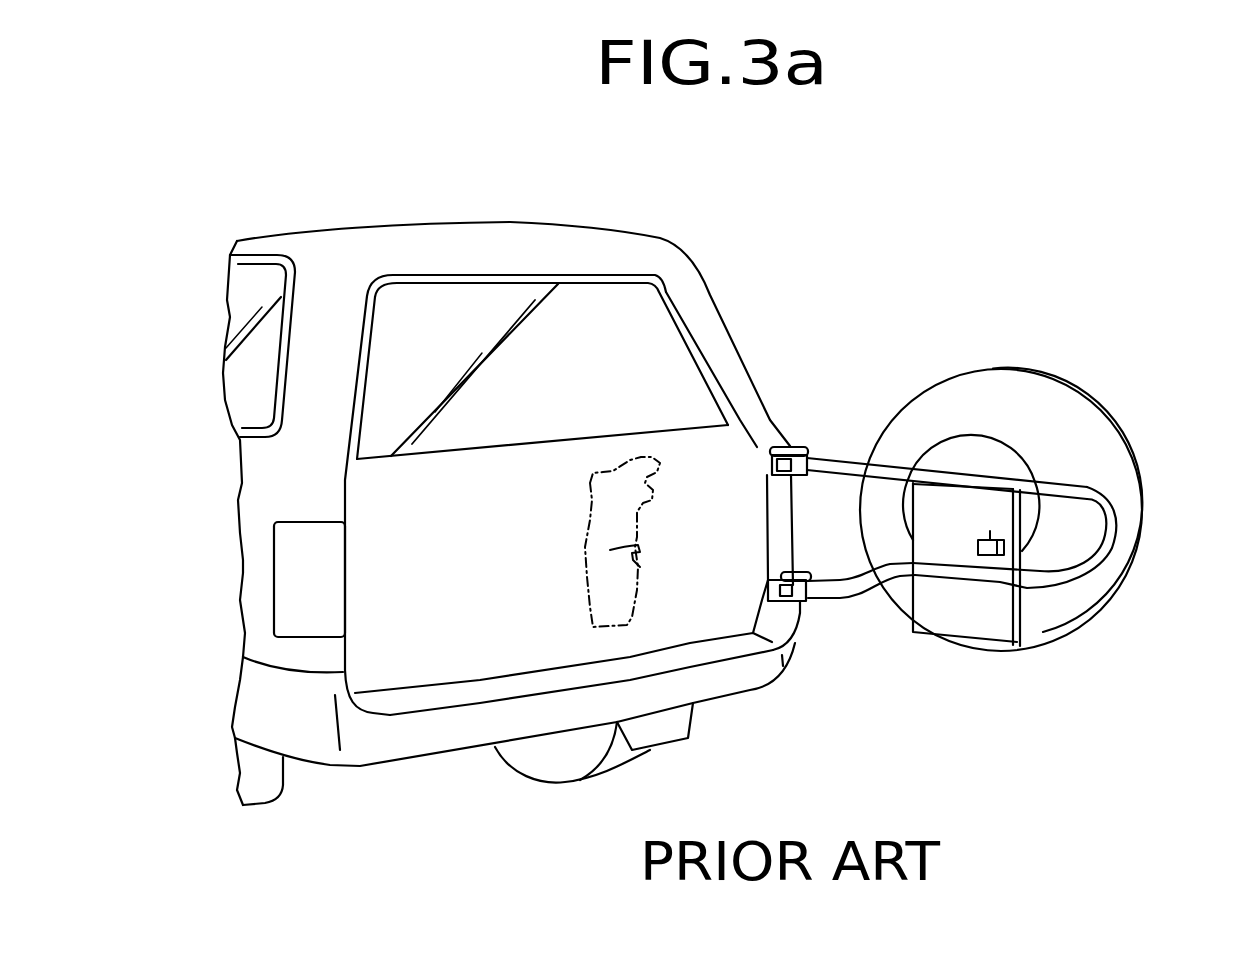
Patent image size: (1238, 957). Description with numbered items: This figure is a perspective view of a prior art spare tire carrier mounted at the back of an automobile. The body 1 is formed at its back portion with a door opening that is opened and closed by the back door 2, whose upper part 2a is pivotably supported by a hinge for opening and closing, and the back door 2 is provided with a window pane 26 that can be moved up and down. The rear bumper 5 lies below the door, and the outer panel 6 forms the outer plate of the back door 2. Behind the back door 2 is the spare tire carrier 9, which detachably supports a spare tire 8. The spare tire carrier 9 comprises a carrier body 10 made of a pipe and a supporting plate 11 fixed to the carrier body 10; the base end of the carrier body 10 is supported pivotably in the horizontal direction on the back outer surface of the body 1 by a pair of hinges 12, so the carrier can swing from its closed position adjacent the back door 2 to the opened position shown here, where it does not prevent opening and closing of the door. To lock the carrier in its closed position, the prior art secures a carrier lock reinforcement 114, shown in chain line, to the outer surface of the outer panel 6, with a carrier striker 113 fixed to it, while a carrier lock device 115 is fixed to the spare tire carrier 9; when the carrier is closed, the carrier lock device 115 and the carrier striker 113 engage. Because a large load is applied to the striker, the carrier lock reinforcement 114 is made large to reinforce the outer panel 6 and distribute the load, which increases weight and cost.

The body 1 is at (718, 300).
The back door 2 is at (337, 492).
The upper part of the back door 2a is at (497, 277).
The window pane 26 is at (640, 305).
The rear bumper 5 is at (448, 740).
The outer panel 6 is at (362, 577).
The spare tire 8 is at (1093, 404).
The spare tire carrier 9 is at (845, 454).
The carrier body 10 is at (1078, 478).
The supporting plate 11 is at (912, 636).
The hinge 12 is at (782, 446).
The carrier striker 113 is at (648, 568).
The carrier lock reinforcement 114 is at (583, 579).
The carrier lock device 115 is at (988, 526).